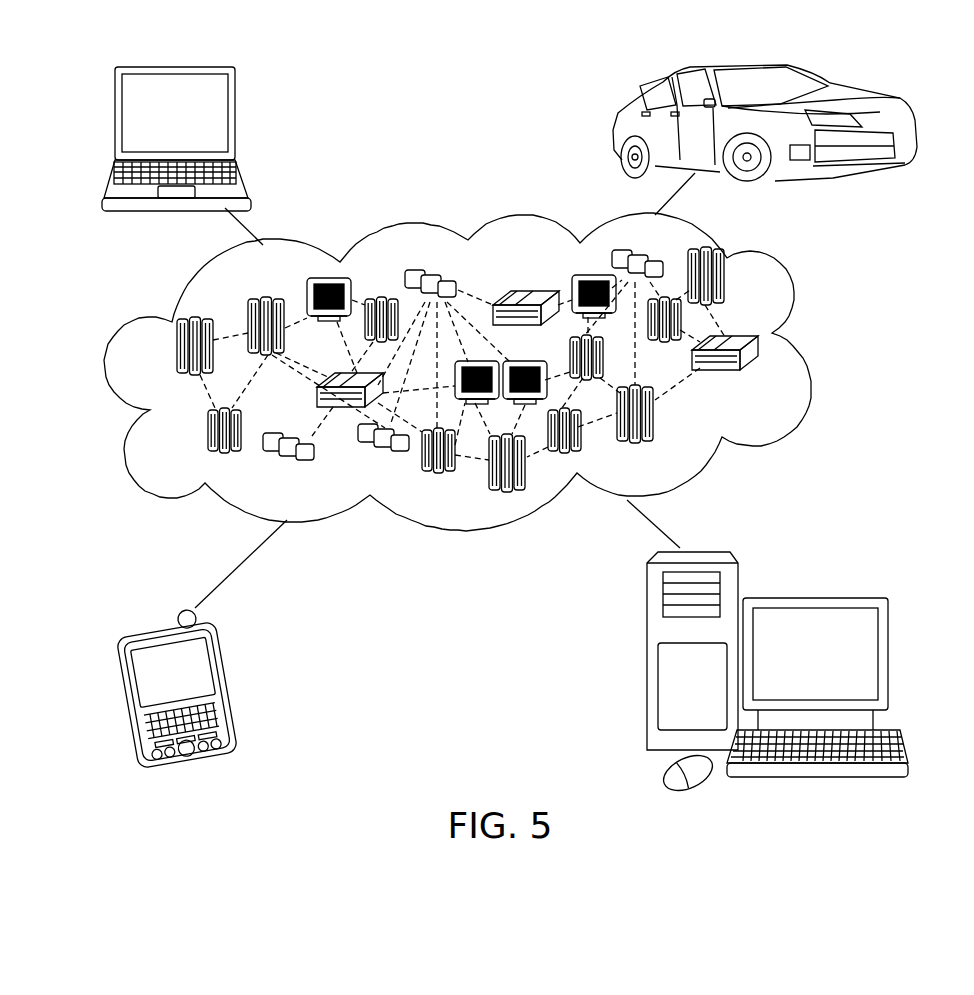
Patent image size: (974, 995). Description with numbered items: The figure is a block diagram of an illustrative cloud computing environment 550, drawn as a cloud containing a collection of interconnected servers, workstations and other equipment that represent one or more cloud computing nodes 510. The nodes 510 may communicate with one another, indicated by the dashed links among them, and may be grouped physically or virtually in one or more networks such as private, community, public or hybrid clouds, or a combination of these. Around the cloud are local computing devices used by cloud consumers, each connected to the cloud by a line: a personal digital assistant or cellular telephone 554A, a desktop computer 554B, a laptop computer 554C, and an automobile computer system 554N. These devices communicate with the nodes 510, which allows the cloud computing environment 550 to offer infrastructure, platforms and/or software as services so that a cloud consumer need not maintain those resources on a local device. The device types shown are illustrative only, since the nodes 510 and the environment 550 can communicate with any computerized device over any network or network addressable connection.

The cloud computing environment 550 is at (496, 372).
The cloud computing nodes 510 is at (527, 369).
The personal digital assistant or cellular telephone 554A is at (221, 644).
The desktop computer 554B is at (817, 594).
The laptop computer 554C is at (214, 156).
The automobile computer system 554N is at (718, 140).